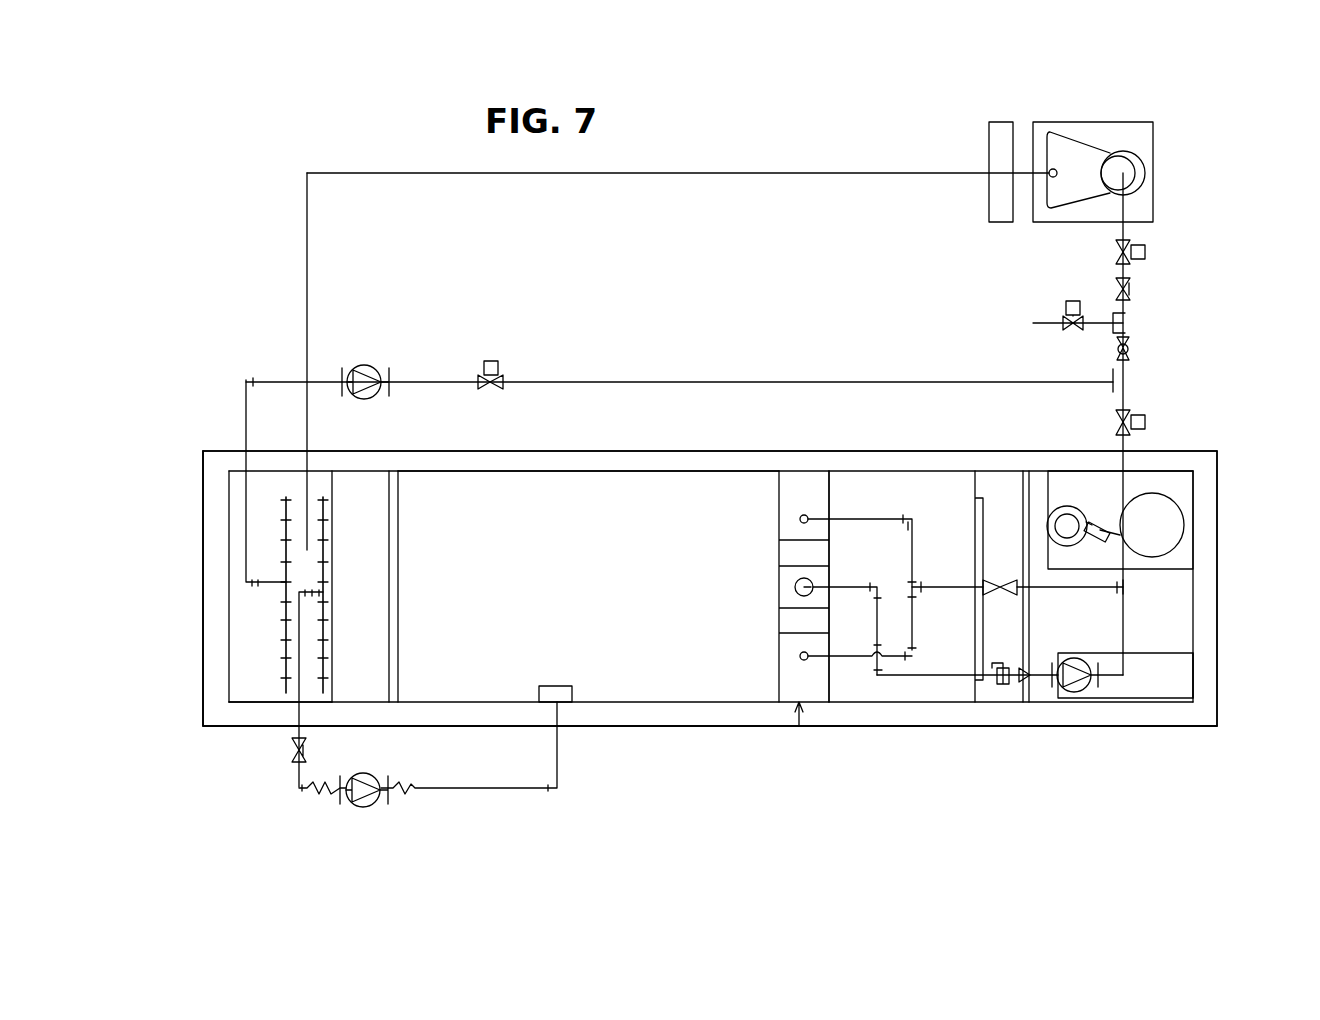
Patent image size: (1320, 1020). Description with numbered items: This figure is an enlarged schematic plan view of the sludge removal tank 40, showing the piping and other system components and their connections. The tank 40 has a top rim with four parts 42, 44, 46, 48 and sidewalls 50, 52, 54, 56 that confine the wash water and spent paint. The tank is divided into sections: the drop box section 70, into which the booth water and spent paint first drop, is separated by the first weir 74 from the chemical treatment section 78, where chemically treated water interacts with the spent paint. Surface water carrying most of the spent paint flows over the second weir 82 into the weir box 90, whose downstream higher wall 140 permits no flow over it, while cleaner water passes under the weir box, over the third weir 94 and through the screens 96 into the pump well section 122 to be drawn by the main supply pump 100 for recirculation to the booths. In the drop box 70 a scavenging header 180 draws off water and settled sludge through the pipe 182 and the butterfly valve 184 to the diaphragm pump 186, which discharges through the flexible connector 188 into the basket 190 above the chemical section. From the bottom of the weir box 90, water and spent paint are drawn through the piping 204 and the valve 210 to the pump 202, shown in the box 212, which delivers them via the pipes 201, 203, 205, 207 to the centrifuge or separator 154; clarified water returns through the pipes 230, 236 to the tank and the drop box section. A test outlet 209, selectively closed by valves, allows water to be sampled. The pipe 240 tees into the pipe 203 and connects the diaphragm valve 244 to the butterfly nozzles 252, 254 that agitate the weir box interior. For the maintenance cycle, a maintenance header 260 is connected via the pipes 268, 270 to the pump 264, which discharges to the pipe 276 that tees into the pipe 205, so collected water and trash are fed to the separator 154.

The sludge removal tank 40 is at (868, 745).
The top rim part 42 is at (212, 612).
The top rim part 44 is at (663, 715).
The top rim part 46 is at (1210, 542).
The top rim part 48 is at (1005, 460).
The sidewall 50 is at (203, 680).
The sidewall 52 is at (625, 728).
The sidewall 54 is at (1218, 578).
The sidewall 56 is at (840, 450).
The drop box section 70 is at (253, 712).
The first weir 74 is at (360, 688).
The chemical treatment section 78 is at (588, 533).
The second weir 82 is at (775, 667).
The weir box 90 is at (799, 726).
The third weir 94 is at (965, 705).
The screens 96 is at (1022, 690).
The main supply pump 100 is at (1145, 518).
The pump well section 122 is at (1170, 620).
The downstream higher wall 140 is at (830, 495).
The centrifuge or separator 154 is at (1085, 118).
The scavenging header 180 is at (325, 520).
The pipe 182 is at (292, 735).
The butterfly valve 184 is at (299, 775).
The diaphragm pump 186 is at (372, 805).
The flexible connector 188 is at (413, 788).
The basket 190 is at (572, 690).
The pipe 201 is at (1135, 690).
The pump 202 is at (1088, 690).
The pipe 203 is at (1125, 613).
The piping 204 is at (920, 675).
The pipe 205 is at (1130, 382).
The pipe 207 is at (1130, 240).
The test outlet 209 is at (1033, 323).
The valve 210 is at (998, 690).
The box 212 is at (1180, 640).
The pipe 230 is at (818, 173).
The pipe 236 is at (307, 308).
The pipe 240 is at (1115, 592).
The diaphragm valve 244 is at (995, 580).
The butterfly nozzle 252 is at (800, 519).
The butterfly nozzle 254 is at (808, 660).
The maintenance header 260 is at (285, 540).
The pump 264 is at (372, 368).
The pipe 268 is at (246, 425).
The pipe 270 is at (280, 382).
The pipe 276 is at (840, 382).